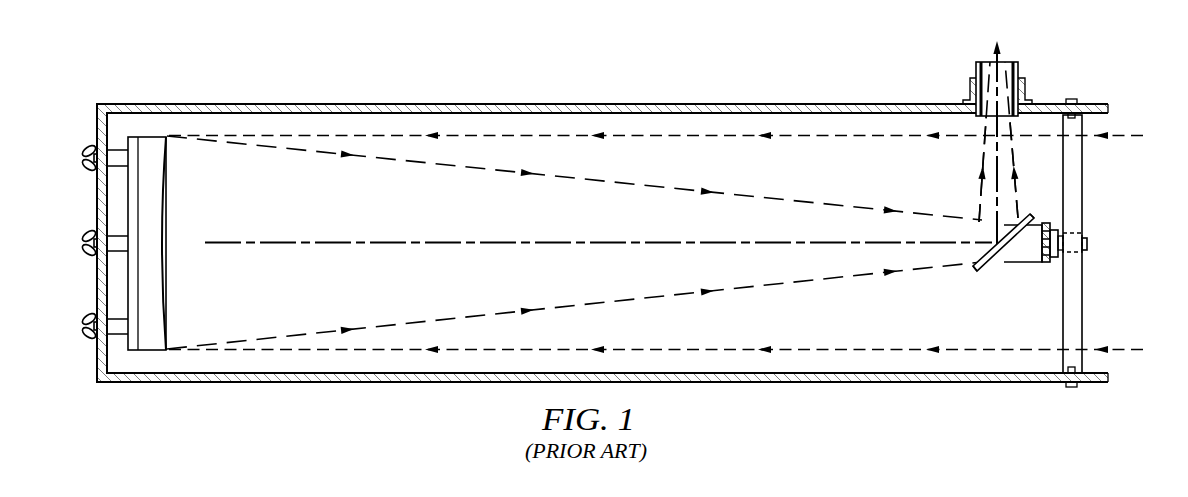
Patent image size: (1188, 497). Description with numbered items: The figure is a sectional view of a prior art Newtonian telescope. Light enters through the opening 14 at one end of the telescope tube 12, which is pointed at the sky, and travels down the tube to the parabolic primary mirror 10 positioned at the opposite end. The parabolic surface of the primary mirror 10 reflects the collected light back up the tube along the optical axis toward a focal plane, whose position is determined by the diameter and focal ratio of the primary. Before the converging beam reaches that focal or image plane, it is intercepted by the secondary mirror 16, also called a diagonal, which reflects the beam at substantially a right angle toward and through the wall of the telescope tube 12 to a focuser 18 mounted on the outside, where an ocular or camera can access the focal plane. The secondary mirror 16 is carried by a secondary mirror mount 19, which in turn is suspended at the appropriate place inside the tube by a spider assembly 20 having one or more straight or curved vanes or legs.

The primary mirror 10 is at (152, 203).
The telescope tube 12 is at (778, 104).
The opening 14 is at (1148, 315).
The secondary mirror 16 is at (1005, 254).
The focuser 18 is at (975, 72).
The secondary mirror mount 19 is at (1136, 207).
The spider assembly 20 is at (1073, 255).